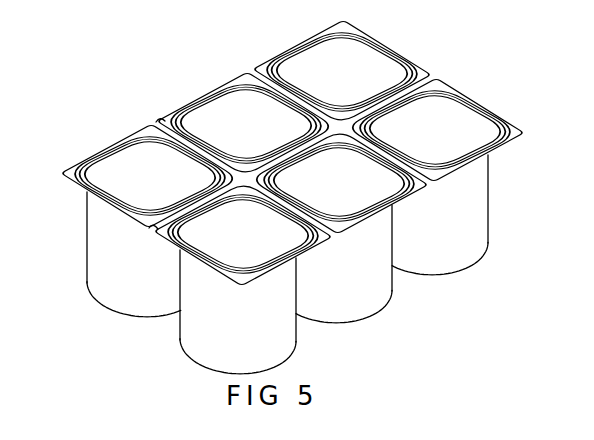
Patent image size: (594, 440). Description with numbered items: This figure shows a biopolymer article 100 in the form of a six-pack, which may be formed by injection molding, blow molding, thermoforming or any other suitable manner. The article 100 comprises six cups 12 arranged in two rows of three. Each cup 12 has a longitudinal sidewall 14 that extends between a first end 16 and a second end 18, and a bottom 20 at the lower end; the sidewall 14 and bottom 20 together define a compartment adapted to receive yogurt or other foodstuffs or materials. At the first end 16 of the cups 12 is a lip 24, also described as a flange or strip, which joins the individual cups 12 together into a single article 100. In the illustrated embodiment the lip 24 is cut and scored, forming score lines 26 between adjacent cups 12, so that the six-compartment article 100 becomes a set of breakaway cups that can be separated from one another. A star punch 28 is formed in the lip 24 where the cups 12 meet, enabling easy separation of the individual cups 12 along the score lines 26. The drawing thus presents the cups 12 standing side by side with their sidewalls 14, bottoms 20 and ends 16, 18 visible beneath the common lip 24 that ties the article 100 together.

The biopolymer article 100 is at (467, 78).
The cup 12 is at (295, 200).
The longitudinal sidewall 14 is at (469, 213).
The first end 16 is at (470, 168).
The second end 18 is at (460, 235).
The bottom 20 is at (432, 276).
The lip 24 is at (508, 132).
The score lines 26 is at (153, 226).
The star punch 28 is at (158, 120).